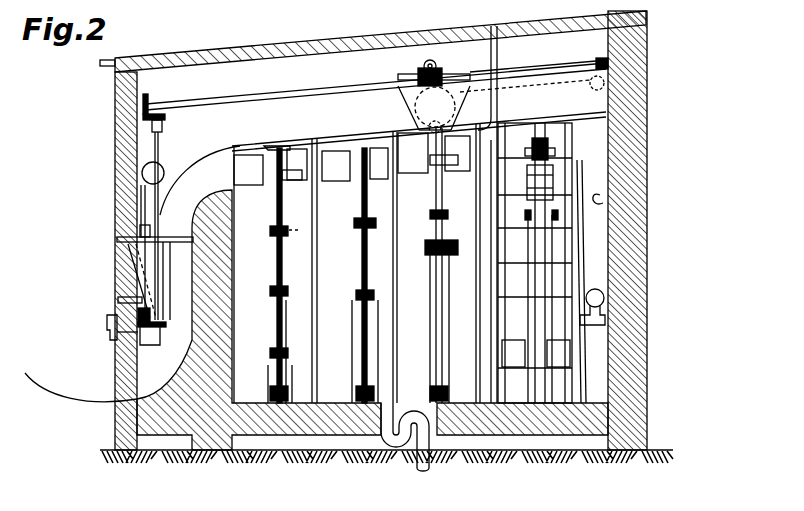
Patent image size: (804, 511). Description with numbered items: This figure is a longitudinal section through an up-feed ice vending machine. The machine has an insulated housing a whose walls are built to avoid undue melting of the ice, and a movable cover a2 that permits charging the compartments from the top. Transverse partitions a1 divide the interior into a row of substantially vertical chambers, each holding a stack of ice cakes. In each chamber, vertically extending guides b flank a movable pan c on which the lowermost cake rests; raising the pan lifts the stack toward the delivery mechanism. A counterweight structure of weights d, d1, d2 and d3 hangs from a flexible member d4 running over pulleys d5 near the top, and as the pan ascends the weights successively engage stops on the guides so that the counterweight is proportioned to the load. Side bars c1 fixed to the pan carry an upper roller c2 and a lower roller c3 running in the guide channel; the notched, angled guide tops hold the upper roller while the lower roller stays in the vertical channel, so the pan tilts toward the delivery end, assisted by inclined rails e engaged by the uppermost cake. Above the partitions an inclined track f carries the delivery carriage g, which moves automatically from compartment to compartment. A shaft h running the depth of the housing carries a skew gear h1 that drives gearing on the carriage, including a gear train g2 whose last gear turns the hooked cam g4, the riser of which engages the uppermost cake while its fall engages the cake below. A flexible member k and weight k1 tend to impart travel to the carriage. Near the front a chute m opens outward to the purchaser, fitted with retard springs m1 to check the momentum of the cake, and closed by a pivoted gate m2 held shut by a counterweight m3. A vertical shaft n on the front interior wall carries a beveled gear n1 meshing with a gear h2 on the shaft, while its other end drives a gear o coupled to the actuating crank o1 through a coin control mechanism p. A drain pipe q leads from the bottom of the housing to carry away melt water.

The housing a is at (115, 118).
The transverse partitions a1 is at (225, 308).
The cover a2 is at (300, 48).
The guides b is at (283, 259).
The pan c is at (252, 186).
The side bars c1 is at (262, 175).
The upper roller c2 is at (288, 138).
The lower roller c3 is at (300, 230).
The weight d is at (270, 393).
The weight d1 is at (440, 298).
The weight d2 is at (272, 296).
The weight d3 is at (272, 233).
The flexible member d4 is at (288, 323).
The pulleys d5 is at (581, 140).
The inclined rails e is at (330, 144).
The track f is at (532, 91).
The delivery carriage g is at (458, 68).
The gear train g2 is at (436, 60).
The hooked cam g4 is at (542, 70).
The shaft h is at (296, 95).
The skew gear h1 is at (400, 78).
The gear h2 is at (150, 100).
The flexible member k is at (607, 198).
The weight k1 is at (612, 307).
The chute m is at (164, 226).
The retard springs m1 is at (162, 208).
The gate m2 is at (167, 247).
The counterweight m3 is at (140, 238).
The vertically extending shaft n is at (134, 262).
The beveled gear n1 is at (164, 120).
The gear o is at (112, 340).
The actuating crank o1 is at (107, 330).
The coin control mechanism p is at (118, 299).
The drain pipe q is at (428, 442).